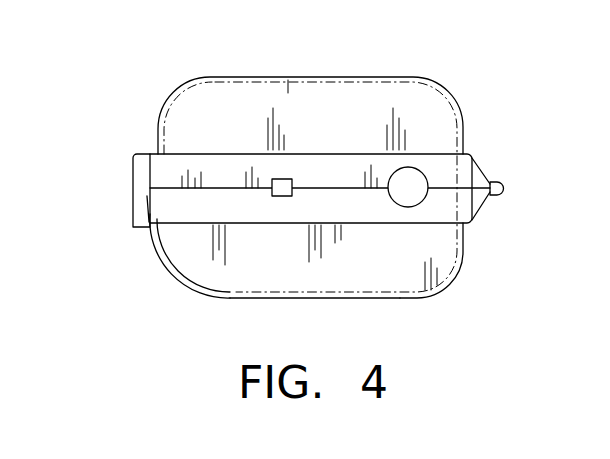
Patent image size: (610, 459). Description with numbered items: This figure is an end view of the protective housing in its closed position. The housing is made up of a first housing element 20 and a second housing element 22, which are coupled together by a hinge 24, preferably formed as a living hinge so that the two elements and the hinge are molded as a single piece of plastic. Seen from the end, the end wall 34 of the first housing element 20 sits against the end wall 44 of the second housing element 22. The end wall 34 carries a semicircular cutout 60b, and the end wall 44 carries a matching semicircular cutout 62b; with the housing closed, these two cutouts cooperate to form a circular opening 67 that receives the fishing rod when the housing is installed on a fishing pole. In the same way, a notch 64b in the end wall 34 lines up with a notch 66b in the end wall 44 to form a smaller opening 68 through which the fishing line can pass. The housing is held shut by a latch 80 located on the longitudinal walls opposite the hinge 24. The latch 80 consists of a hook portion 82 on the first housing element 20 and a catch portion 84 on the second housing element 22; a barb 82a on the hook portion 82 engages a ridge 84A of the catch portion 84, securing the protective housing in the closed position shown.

The first housing element 20 is at (460, 73).
The second housing element 22 is at (483, 264).
The hinge 24 is at (506, 180).
The end wall 34 is at (184, 91).
The end wall 44 is at (292, 301).
The semicircular cutout 60b is at (411, 168).
The semicircular cutout 62b is at (426, 207).
The notch 64b is at (283, 179).
The notch 66b is at (290, 197).
The circular opening 67 is at (410, 207).
The opening 68 is at (272, 196).
The latch 80 is at (110, 189).
The hook portion 82 is at (133, 165).
The barb 82a is at (147, 227).
The catch portion 84 is at (171, 247).
The ridge 84A is at (155, 252).